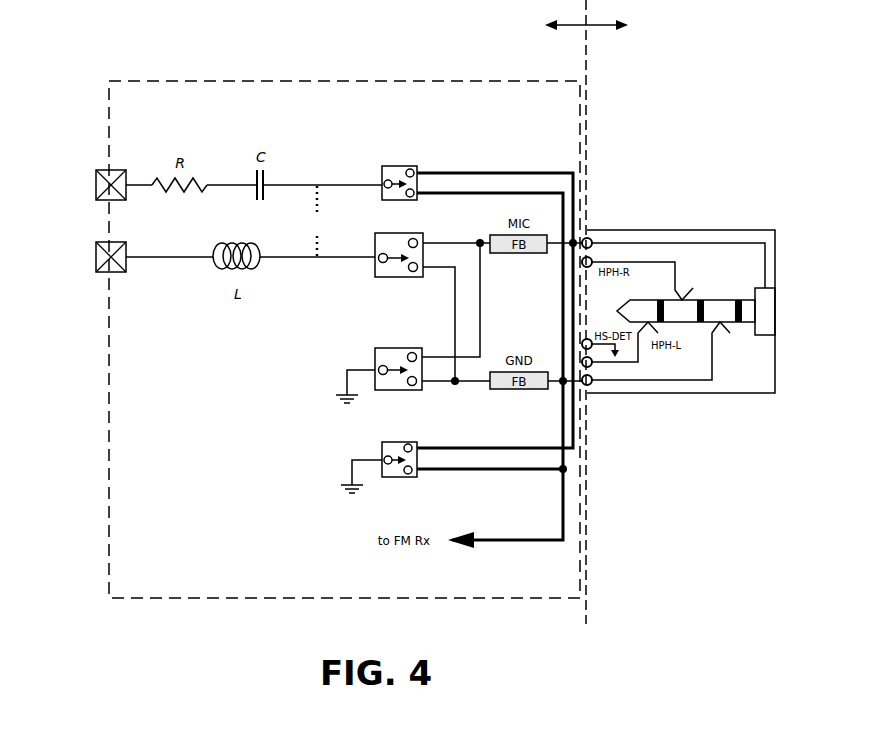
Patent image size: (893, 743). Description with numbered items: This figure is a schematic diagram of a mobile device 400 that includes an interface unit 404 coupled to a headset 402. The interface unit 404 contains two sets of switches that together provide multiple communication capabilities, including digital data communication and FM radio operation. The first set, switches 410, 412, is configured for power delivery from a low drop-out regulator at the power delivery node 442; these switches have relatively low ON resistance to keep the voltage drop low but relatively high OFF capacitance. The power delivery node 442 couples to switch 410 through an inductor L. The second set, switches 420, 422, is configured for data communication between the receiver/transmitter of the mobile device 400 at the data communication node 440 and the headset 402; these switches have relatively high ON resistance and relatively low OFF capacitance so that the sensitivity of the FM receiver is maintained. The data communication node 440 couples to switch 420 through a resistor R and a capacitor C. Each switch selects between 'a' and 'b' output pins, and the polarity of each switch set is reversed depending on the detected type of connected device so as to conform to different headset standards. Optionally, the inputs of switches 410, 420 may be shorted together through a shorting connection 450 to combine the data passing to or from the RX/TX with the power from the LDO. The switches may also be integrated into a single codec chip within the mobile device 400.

The mobile device 400 is at (561, 26).
The headset 402 is at (630, 312).
The interface unit 404 is at (344, 339).
The switch 410 is at (381, 260).
The switch 412 is at (379, 370).
The switch 420 is at (378, 176).
The switch 422 is at (379, 465).
The data communication node 440 is at (79, 172).
The power delivery node 442 is at (85, 269).
The shorting connection 450 is at (313, 221).